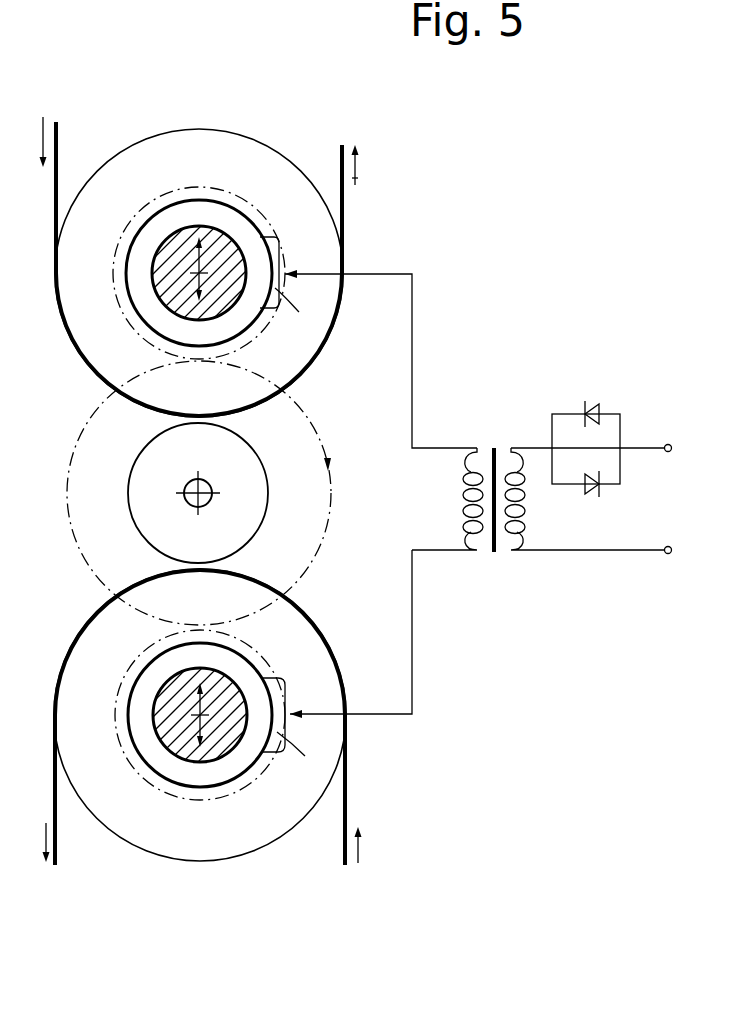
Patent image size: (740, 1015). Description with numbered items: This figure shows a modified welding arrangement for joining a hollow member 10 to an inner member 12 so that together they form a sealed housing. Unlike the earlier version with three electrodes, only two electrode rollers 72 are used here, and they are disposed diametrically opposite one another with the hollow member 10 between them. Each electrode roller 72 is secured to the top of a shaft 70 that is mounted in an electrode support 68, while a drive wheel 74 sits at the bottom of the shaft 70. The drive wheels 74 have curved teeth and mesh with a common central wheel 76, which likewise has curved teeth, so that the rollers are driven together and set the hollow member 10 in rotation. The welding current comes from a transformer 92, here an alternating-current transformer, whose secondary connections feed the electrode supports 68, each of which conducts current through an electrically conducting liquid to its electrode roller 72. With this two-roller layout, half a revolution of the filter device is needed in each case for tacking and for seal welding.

The hollow member 10 is at (132, 467).
The inner member 12 is at (153, 503).
The electrode support 68 is at (218, 213).
The shaft 70 is at (188, 247).
The electrode roller 72 is at (135, 163).
The drive wheel 74 is at (262, 208).
The central wheel 76 is at (68, 473).
The transformer 92 is at (497, 408).